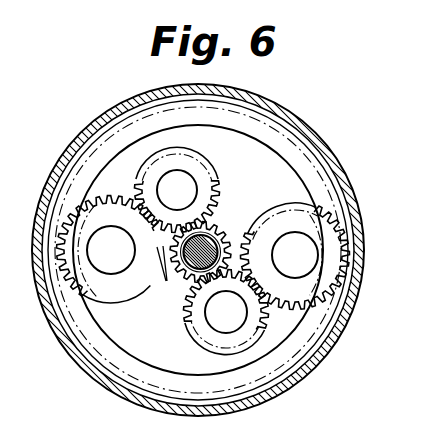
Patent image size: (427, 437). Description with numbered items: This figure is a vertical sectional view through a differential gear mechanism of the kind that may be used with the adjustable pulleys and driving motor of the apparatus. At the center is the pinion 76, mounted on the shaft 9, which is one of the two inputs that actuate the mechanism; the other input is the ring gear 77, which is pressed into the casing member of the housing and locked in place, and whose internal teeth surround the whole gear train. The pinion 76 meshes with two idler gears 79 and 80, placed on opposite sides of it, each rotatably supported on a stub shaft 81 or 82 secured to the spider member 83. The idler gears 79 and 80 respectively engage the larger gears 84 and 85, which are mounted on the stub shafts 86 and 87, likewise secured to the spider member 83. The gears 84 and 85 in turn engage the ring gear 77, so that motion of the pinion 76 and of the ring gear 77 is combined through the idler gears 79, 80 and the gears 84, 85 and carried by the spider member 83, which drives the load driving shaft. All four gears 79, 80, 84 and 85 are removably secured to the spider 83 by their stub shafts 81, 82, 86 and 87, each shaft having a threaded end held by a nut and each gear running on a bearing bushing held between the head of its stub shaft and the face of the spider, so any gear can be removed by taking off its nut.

The shaft 9 is at (228, 256).
The pinion 76 is at (211, 232).
The ring gear 77 is at (66, 292).
The idler gear 79 is at (208, 207).
The idler gear 80 is at (188, 302).
The stub shaft 81 is at (182, 178).
The stub shaft 82 is at (220, 313).
The spider member 83 is at (273, 180).
The gear 84 is at (124, 250).
The gear 85 is at (317, 208).
The stub shaft 86 is at (118, 261).
The stub shaft 87 is at (288, 238).